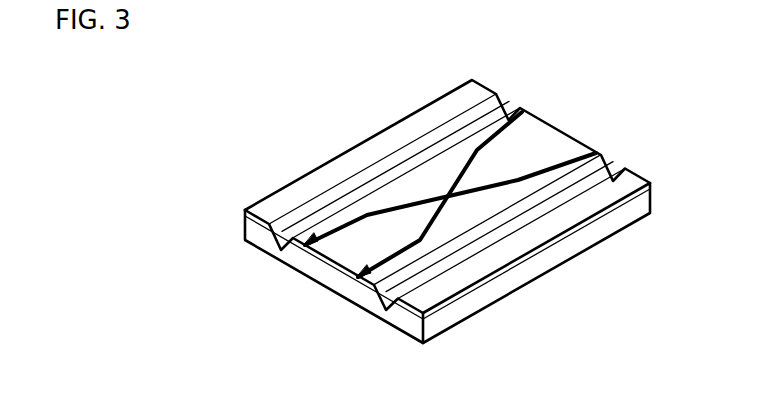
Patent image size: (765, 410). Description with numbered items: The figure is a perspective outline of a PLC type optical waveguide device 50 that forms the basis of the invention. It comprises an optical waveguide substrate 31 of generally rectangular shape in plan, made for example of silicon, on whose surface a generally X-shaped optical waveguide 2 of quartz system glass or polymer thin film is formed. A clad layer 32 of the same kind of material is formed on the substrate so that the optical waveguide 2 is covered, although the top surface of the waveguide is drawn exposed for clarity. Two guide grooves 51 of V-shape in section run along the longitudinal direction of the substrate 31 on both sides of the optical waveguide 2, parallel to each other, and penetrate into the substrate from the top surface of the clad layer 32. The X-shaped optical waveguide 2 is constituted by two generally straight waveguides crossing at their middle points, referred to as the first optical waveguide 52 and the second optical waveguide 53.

The optical waveguide 2 is at (458, 177).
The optical waveguide substrate 31 is at (547, 257).
The clad layer 32 is at (385, 143).
The optical waveguide device 50 is at (459, 236).
The guide grooves 51 is at (377, 188).
The first optical waveguide 52 is at (304, 246).
The second optical waveguide 53 is at (400, 258).